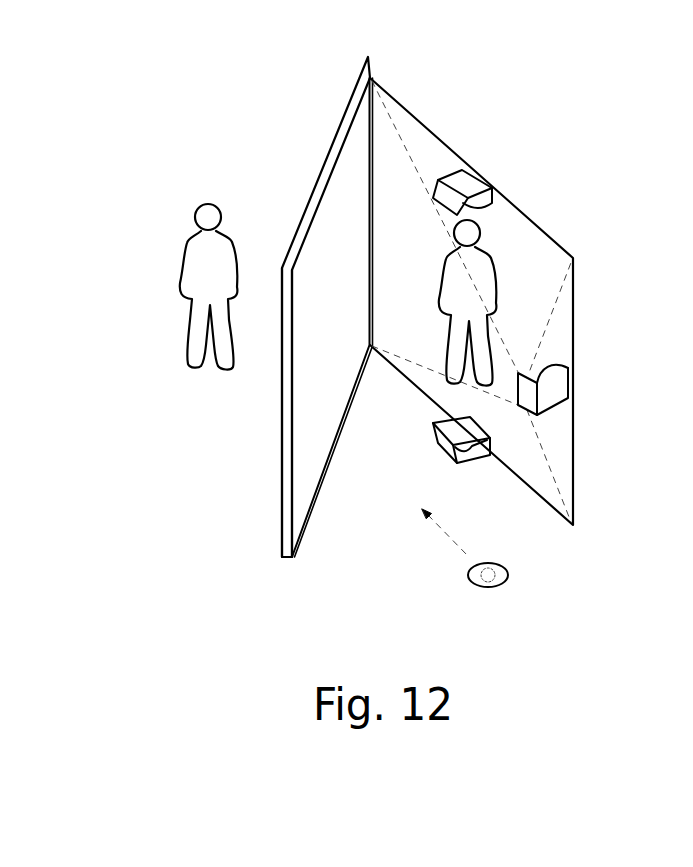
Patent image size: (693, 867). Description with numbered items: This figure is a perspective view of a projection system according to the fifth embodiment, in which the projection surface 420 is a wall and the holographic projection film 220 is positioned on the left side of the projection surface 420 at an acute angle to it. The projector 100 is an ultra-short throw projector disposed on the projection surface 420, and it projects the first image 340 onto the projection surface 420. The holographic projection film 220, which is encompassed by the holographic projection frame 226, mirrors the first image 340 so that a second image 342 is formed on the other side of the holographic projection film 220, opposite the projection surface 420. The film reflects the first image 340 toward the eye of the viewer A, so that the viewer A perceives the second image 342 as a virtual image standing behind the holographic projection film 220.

The projector 100 is at (473, 183).
The holographic projection film 220 is at (303, 475).
The holographic projection frame 226 is at (275, 508).
The first image 340 is at (493, 267).
The second image 342 is at (185, 240).
The projection surface 420 is at (437, 390).
The viewer A is at (488, 587).